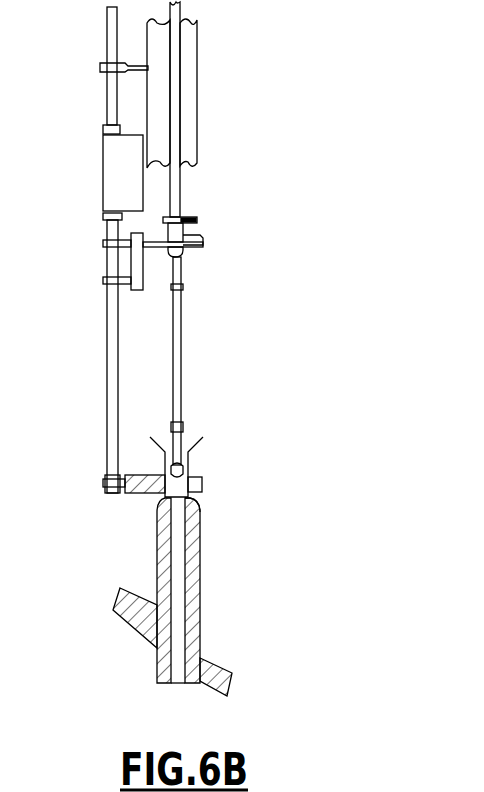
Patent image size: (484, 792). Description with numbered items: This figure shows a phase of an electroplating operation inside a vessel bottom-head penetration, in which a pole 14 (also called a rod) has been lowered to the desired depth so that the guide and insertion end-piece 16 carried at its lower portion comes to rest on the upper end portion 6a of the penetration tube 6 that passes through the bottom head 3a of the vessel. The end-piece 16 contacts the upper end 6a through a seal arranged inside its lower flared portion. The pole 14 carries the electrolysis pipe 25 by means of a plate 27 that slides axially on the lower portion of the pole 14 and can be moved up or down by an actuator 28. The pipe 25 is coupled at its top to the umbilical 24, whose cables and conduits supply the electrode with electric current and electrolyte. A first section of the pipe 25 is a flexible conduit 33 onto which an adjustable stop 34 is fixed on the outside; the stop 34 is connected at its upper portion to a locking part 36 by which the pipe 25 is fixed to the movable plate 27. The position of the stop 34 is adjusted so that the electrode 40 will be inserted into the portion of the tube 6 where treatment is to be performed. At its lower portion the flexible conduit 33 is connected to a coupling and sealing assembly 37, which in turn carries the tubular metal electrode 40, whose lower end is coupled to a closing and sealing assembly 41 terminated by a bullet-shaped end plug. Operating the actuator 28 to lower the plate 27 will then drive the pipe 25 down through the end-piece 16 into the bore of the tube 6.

The actuator 28 is at (112, 182).
The umbilical 24 is at (180, 197).
The locking part 36 is at (203, 238).
The electrolysis pipe 25 is at (247, 265).
The plate 27 is at (137, 258).
The adjustable stop 34 is at (172, 287).
The flexible conduit 33 is at (180, 350).
The coupling and sealing assembly 37 is at (178, 421).
The pole 14 is at (110, 443).
The electrode 40 is at (177, 447).
The closing and sealing assembly 41 is at (183, 470).
The guide and insertion end-piece 16 is at (202, 482).
The vessel bottom-head penetration 6 is at (157, 595).
The upper end portion 6a is at (193, 513).
The bottom head 3a is at (140, 622).